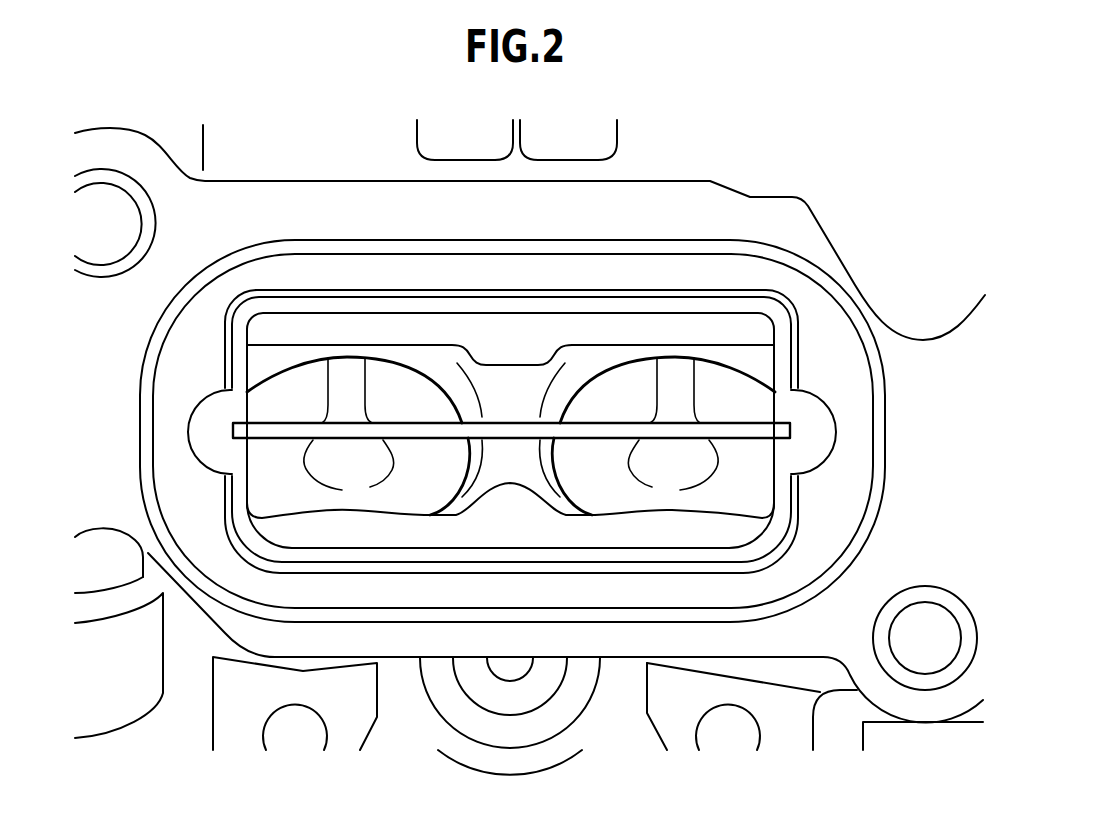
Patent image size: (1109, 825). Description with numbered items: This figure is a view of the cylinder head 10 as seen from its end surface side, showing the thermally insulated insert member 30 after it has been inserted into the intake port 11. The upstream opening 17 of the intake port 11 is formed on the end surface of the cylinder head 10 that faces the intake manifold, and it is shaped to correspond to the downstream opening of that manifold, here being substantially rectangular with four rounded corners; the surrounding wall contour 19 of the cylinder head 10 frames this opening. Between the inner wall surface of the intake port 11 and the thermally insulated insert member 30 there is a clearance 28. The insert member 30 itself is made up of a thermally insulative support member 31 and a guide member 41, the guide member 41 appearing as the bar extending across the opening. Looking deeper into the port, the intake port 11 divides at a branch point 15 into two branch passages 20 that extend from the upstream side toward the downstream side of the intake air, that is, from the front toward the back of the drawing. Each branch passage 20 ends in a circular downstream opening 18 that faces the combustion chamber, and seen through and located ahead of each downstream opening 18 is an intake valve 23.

The cylinder head 10 is at (710, 212).
The intake port 11 is at (348, 304).
The branch point 15 is at (513, 385).
The upstream opening 17 is at (512, 337).
The downstream opening 18 is at (700, 376).
The hood portion 19 is at (227, 263).
The branch passage 20 is at (450, 385).
The intake valve 23 is at (439, 488).
The clearance 28 is at (246, 308).
The thermally insulated insert member 30 is at (887, 153).
The thermally insulative support member 31 is at (733, 307).
The guide member 41 is at (731, 428).